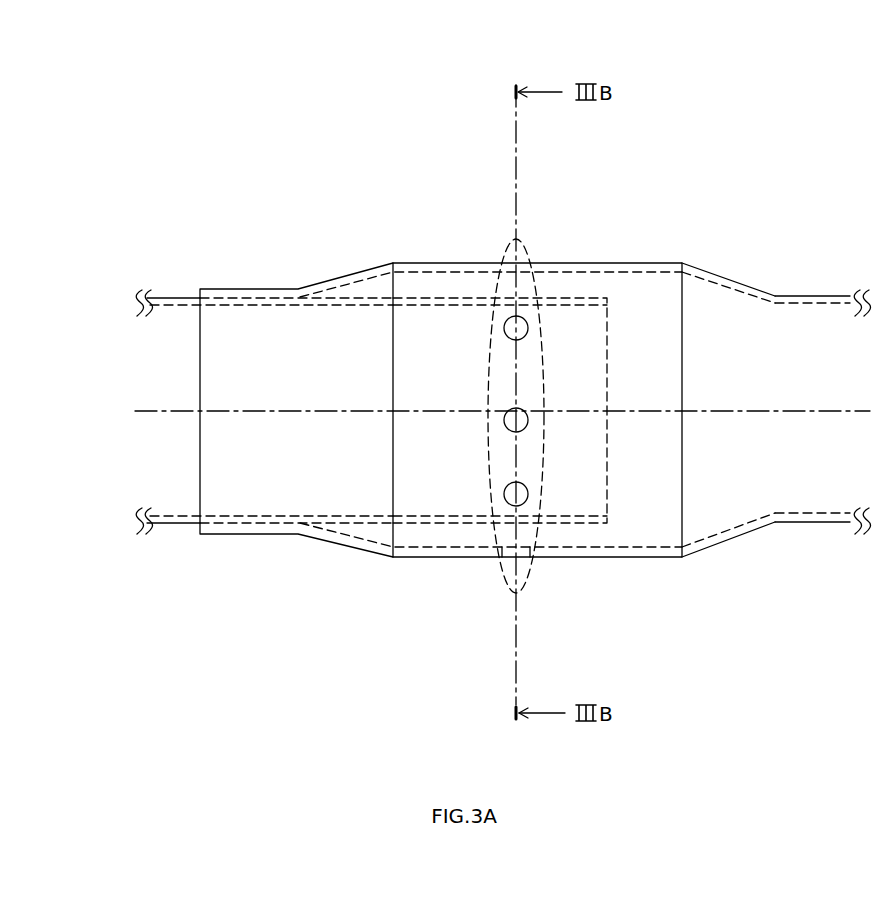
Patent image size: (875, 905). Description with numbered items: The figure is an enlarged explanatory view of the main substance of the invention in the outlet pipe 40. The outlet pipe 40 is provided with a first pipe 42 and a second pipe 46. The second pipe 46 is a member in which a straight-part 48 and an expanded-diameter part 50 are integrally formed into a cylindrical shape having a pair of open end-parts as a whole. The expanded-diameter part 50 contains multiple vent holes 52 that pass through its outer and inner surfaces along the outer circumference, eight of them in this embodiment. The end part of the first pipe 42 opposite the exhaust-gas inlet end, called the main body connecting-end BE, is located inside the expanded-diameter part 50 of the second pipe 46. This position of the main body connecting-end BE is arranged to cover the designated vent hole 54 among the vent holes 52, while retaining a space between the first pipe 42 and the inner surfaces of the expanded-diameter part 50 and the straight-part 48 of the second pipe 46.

The outlet pipe 40 is at (353, 198).
The first pipe 42 is at (327, 524).
The second pipe 46 is at (747, 329).
The straight-part 48 is at (828, 296).
The expanded-diameter part 50 is at (623, 263).
The vent holes 52 is at (502, 565).
The designated vent hole 54 is at (521, 561).
The main body connecting-end BE is at (607, 531).